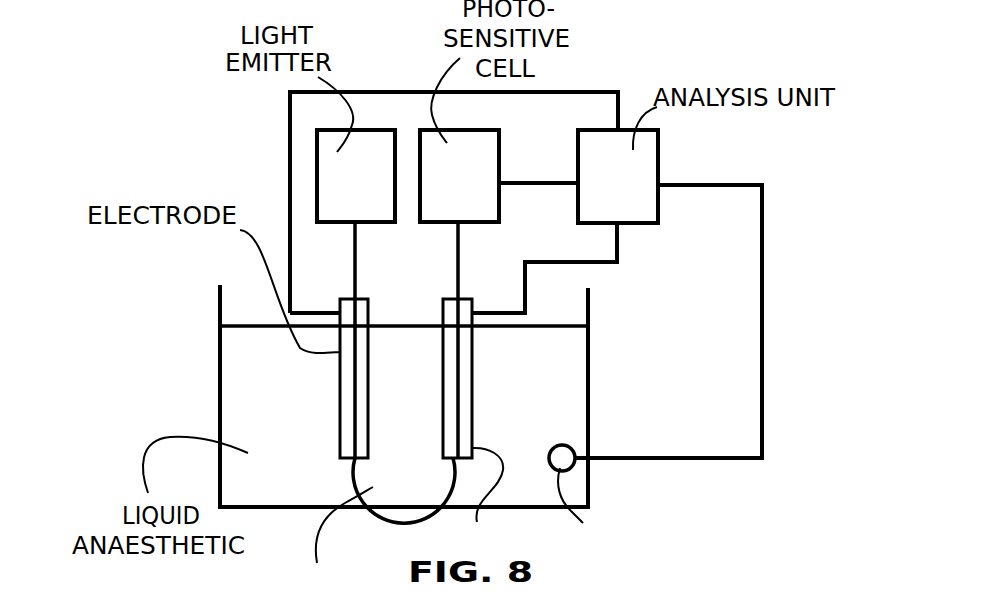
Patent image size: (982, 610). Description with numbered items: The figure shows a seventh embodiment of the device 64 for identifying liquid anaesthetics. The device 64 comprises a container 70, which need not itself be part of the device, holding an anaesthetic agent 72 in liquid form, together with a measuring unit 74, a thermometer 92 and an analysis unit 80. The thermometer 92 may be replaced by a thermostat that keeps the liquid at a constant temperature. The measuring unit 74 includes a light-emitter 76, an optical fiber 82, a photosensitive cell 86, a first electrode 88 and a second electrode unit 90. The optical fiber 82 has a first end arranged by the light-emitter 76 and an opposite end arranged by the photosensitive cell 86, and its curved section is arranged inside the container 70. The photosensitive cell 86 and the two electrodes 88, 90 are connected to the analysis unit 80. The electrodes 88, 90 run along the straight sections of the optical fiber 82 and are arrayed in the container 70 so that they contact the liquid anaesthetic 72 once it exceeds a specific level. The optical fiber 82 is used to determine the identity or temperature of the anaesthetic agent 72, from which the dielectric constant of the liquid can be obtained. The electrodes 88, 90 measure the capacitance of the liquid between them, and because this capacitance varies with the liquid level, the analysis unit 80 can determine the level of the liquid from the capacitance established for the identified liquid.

The device 64 is at (390, 58).
The measuring unit 74 is at (235, 131).
The light-emitter 76 is at (356, 176).
The photosensitive cell 86 is at (459, 176).
The analysis unit 80 is at (668, 294).
The container 70 is at (588, 302).
The anaesthetic agent 72 is at (560, 407).
The first electrode 88 is at (340, 392).
The second electrode unit 90 is at (472, 367).
The optical fiber 82 is at (365, 482).
The thermometer 92 is at (575, 462).